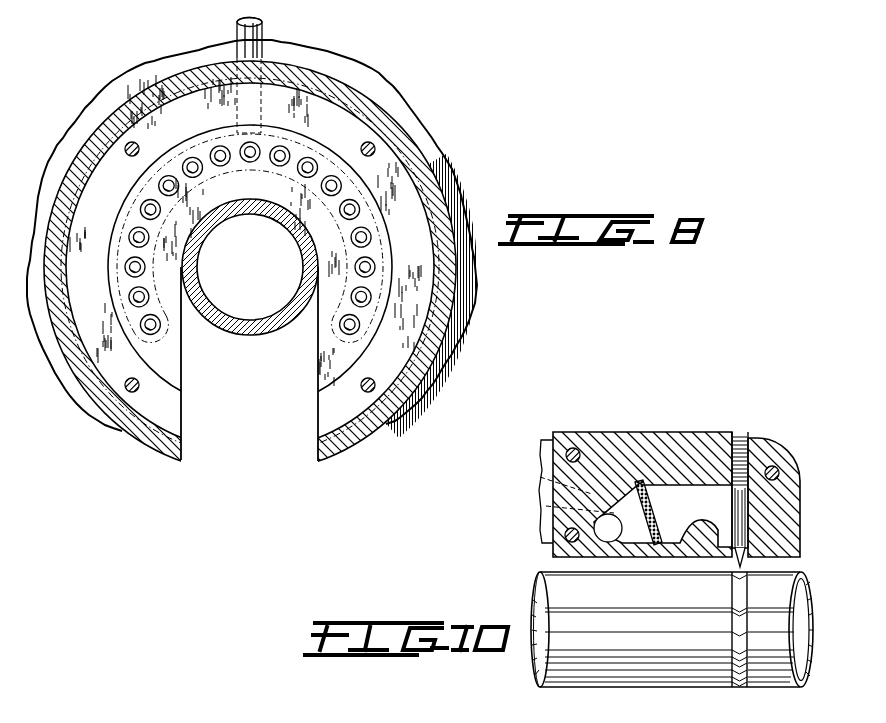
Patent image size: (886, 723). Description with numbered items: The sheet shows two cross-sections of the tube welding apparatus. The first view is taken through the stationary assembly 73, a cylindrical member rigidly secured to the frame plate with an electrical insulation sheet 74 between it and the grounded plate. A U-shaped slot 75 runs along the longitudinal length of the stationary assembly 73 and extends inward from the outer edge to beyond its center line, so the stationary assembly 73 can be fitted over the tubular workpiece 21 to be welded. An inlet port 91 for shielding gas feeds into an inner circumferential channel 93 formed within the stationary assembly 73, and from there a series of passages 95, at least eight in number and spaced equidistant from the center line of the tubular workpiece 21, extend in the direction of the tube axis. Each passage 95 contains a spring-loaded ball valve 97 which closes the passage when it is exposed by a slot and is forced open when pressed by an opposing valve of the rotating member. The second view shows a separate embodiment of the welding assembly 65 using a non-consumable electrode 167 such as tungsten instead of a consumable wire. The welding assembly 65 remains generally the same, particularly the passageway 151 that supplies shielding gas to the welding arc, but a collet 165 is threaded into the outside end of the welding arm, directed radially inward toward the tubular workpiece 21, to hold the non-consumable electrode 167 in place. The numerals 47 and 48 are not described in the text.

In FIG. 8, the tubular workpiece 21 is at (232, 335).
In FIG. 10, the tubular workpiece 21 is at (531, 570).
In FIG. 8, the unknown (cut off) 47 is at (421, 5).
In FIG. 8, the unknown (cut off) 48 is at (509, 5).
In FIG. 10, the welding assembly 65 is at (721, 427).
In FIG. 8, the stationary assembly 73 is at (440, 111).
In FIG. 8, the electrical insulation sheet 74 is at (463, 199).
In FIG. 8, the slot 75 is at (253, 400).
In FIG. 8, the inlet port 91 is at (263, 24).
In FIG. 8, the inner circumferential channel 93 is at (342, 318).
In FIG. 8, the passages 95 is at (213, 148).
In FIG. 8, the spring-loaded ball valve 97 is at (132, 230).
In FIG. 10, the passageway 151 is at (540, 458).
In FIG. 10, the collet 165 is at (744, 441).
In FIG. 10, the non-consumable electrode 167 is at (734, 564).